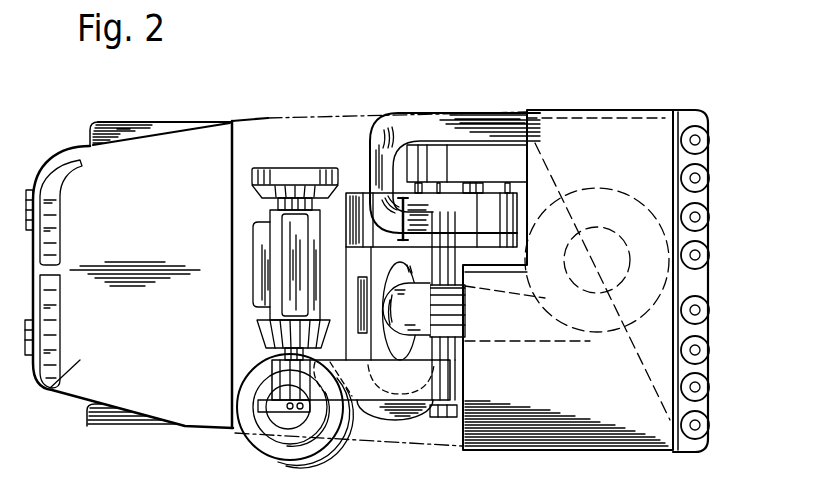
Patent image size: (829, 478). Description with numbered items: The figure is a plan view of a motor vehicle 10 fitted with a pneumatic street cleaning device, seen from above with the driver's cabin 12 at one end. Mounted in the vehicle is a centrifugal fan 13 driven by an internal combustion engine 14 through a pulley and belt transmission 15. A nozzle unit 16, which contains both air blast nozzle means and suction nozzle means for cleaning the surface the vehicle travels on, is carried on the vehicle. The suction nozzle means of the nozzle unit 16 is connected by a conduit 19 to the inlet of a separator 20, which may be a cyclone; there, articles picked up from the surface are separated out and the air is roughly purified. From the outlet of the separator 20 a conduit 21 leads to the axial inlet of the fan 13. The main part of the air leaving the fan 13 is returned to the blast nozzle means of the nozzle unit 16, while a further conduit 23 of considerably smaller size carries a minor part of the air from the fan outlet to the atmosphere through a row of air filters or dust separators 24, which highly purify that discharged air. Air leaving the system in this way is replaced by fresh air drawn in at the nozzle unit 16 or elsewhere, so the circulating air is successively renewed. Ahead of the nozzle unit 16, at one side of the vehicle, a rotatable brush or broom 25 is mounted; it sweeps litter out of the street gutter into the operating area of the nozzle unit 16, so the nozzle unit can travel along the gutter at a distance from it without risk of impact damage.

The motor vehicle 10 is at (270, 117).
The driver's cabin 12 is at (46, 390).
The fan 13 is at (507, 215).
The internal combustion engine 14 is at (288, 233).
The pulley and belt transmission 15 is at (333, 432).
The nozzle unit 16 is at (393, 422).
The conduit 19 is at (462, 340).
The separator 20 is at (528, 440).
The conduit 21 is at (510, 163).
The further conduit 23 is at (427, 127).
The air filters 24 is at (708, 150).
The rotatable brush 25 is at (250, 436).